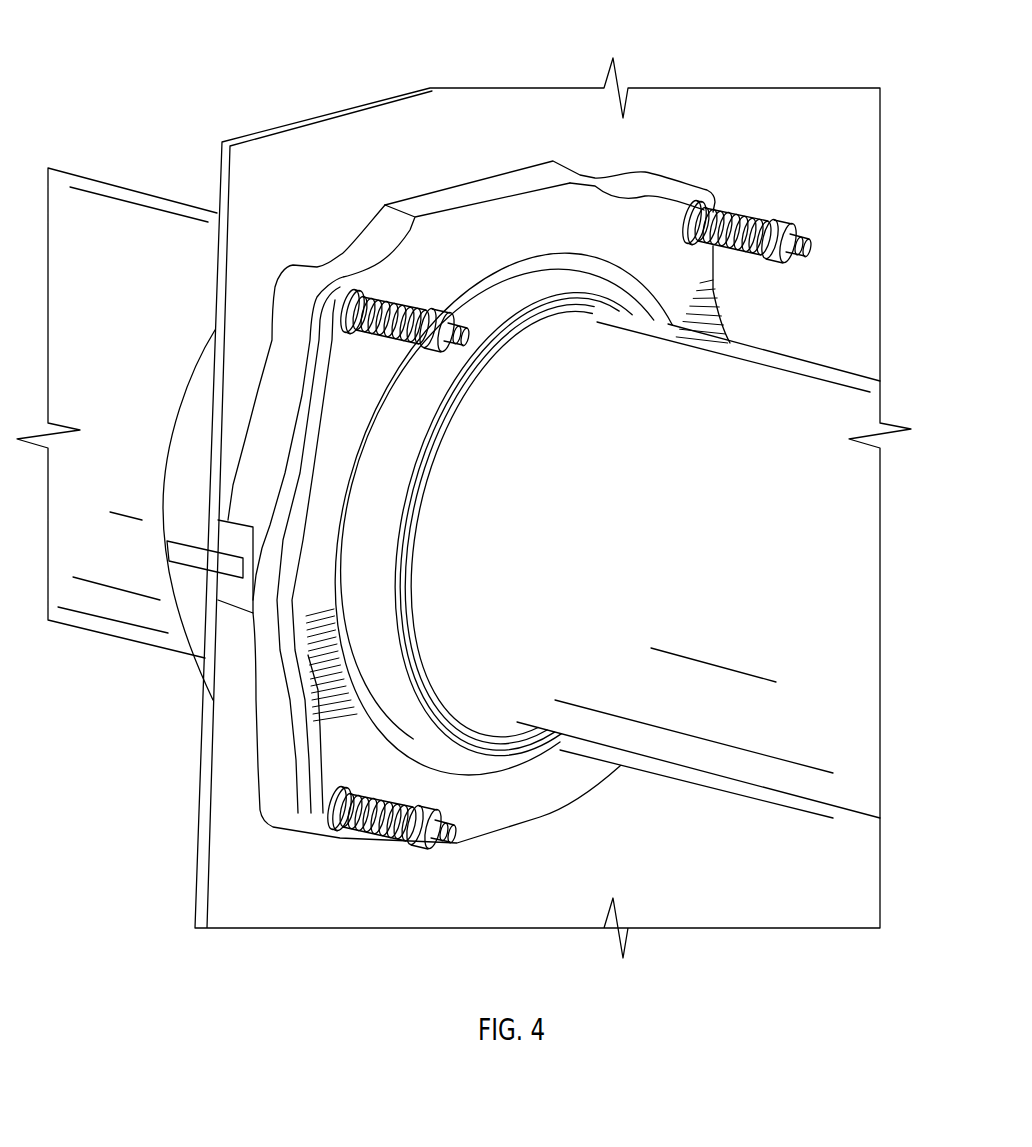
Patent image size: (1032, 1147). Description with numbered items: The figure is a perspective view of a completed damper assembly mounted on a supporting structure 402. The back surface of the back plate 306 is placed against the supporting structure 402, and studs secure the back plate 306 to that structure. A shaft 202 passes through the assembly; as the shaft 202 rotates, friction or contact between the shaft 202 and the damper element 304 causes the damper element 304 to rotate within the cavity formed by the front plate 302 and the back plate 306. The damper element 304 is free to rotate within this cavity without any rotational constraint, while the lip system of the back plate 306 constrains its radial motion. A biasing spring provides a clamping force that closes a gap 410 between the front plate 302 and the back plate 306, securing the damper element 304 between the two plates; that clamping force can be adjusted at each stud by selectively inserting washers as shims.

The supporting structure 402 is at (733, 108).
The shaft 202 is at (791, 439).
The gap 410 is at (299, 396).
The front plate 302 is at (305, 670).
The damper element 304 is at (413, 750).
The back plate 306 is at (233, 618).